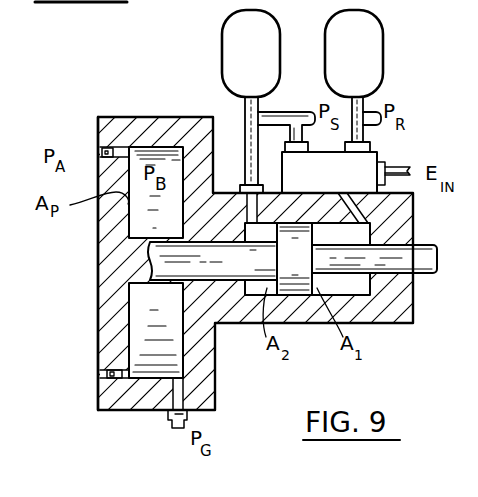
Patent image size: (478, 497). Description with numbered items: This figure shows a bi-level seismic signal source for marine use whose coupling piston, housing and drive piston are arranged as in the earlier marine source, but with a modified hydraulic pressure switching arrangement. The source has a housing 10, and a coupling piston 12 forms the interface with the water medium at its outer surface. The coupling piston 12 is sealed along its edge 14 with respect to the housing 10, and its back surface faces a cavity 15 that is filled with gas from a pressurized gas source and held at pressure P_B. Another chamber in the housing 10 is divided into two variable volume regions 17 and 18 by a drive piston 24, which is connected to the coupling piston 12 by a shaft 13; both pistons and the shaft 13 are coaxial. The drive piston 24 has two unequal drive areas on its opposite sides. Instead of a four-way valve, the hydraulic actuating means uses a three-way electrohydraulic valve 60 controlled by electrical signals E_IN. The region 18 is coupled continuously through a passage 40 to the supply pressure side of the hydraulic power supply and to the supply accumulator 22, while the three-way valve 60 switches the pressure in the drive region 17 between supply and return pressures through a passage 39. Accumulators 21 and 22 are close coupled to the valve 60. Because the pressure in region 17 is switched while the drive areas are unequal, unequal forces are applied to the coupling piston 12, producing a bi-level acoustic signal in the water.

The housing 10 is at (413, 316).
The coupling piston 12 is at (98, 296).
The shaft 13 is at (248, 272).
The edge 14 is at (100, 386).
The cavity 15 is at (151, 365).
The drive region 17 is at (357, 287).
The drive region 18 is at (257, 292).
The accumulator 21 is at (383, 56).
The supply accumulator 22 is at (222, 36).
The drive piston 24 is at (310, 271).
The passage 39 is at (372, 210).
The passage 40 is at (258, 216).
The three-way electrohydraulic valve 60 is at (377, 155).